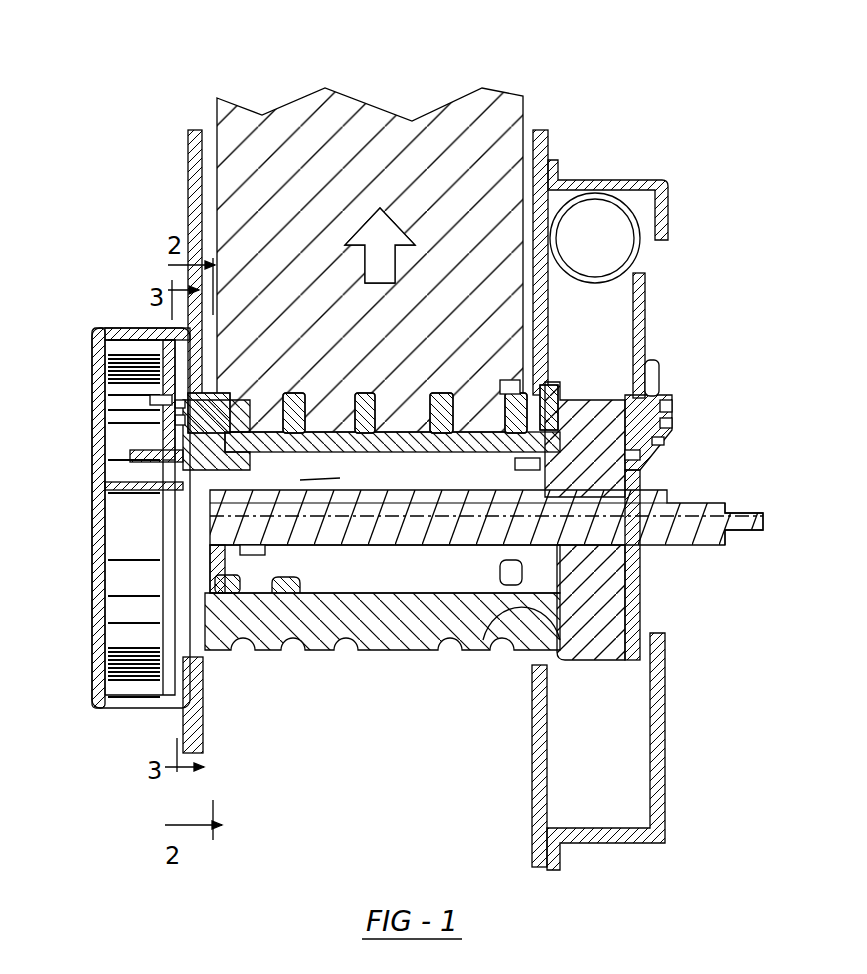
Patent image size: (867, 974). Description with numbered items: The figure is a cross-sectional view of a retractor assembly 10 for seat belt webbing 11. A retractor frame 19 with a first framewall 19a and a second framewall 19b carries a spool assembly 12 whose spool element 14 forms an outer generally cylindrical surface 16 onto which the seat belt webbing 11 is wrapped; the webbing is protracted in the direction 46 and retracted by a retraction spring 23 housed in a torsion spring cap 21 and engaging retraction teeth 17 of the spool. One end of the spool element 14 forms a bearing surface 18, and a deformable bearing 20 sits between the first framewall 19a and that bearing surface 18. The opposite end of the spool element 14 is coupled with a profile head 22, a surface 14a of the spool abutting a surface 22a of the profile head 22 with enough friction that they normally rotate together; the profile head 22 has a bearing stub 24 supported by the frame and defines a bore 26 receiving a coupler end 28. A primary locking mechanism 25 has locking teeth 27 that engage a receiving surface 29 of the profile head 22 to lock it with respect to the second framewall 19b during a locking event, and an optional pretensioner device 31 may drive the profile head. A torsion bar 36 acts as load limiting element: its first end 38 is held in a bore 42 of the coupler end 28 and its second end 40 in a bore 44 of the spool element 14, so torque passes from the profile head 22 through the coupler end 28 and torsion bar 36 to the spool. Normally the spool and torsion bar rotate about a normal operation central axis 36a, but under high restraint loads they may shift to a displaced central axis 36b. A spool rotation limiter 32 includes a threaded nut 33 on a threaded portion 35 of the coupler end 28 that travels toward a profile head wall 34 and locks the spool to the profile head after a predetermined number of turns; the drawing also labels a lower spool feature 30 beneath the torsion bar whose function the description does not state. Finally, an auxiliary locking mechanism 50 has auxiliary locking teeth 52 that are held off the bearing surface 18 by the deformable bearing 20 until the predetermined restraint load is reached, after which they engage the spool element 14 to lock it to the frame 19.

The retractor assembly 10 is at (690, 62).
The seat belt webbing 11 is at (365, 135).
The spool assembly 12 is at (520, 362).
The spool element 14 is at (443, 405).
The surface 14a is at (553, 400).
The outer generally cylindrical surface 16 is at (290, 395).
The retraction teeth 17 is at (130, 488).
The bearing surface 18 is at (178, 440).
The retractor frame 19 is at (366, 478).
The first framewall 19a is at (195, 148).
The second framewall 19b is at (548, 165).
The deformable bearing 20 is at (178, 405).
The torsion spring cap 21 is at (95, 365).
The profile head 22 is at (660, 452).
The surface 22a is at (655, 375).
The retraction spring 23 is at (140, 455).
The bearing stub 24 is at (755, 540).
The primary locking mechanism 25 is at (675, 404).
The bore 26 is at (612, 590).
The locking teeth 27 is at (660, 392).
The coupler end 28 is at (652, 620).
The receiving surface 29 is at (672, 418).
The lower rack 30 is at (283, 618).
The pretensioner device 31 is at (598, 230).
The spool rotation limiter 32 is at (455, 592).
The threaded nut 33 is at (665, 440).
The profile head wall 34 is at (508, 392).
The threaded portion 35 is at (640, 455).
The torsion bar 36 is at (507, 477).
The normal operation central axis 36a is at (425, 476).
The displaced central axis 36b is at (308, 480).
The first end 38 is at (560, 600).
The second end 40 is at (262, 548).
The bore 42 is at (483, 640).
The bore 44 is at (236, 565).
The direction 46 is at (400, 263).
The auxiliary locking mechanism 50 is at (178, 420).
The auxiliary locking teeth 52 is at (160, 398).